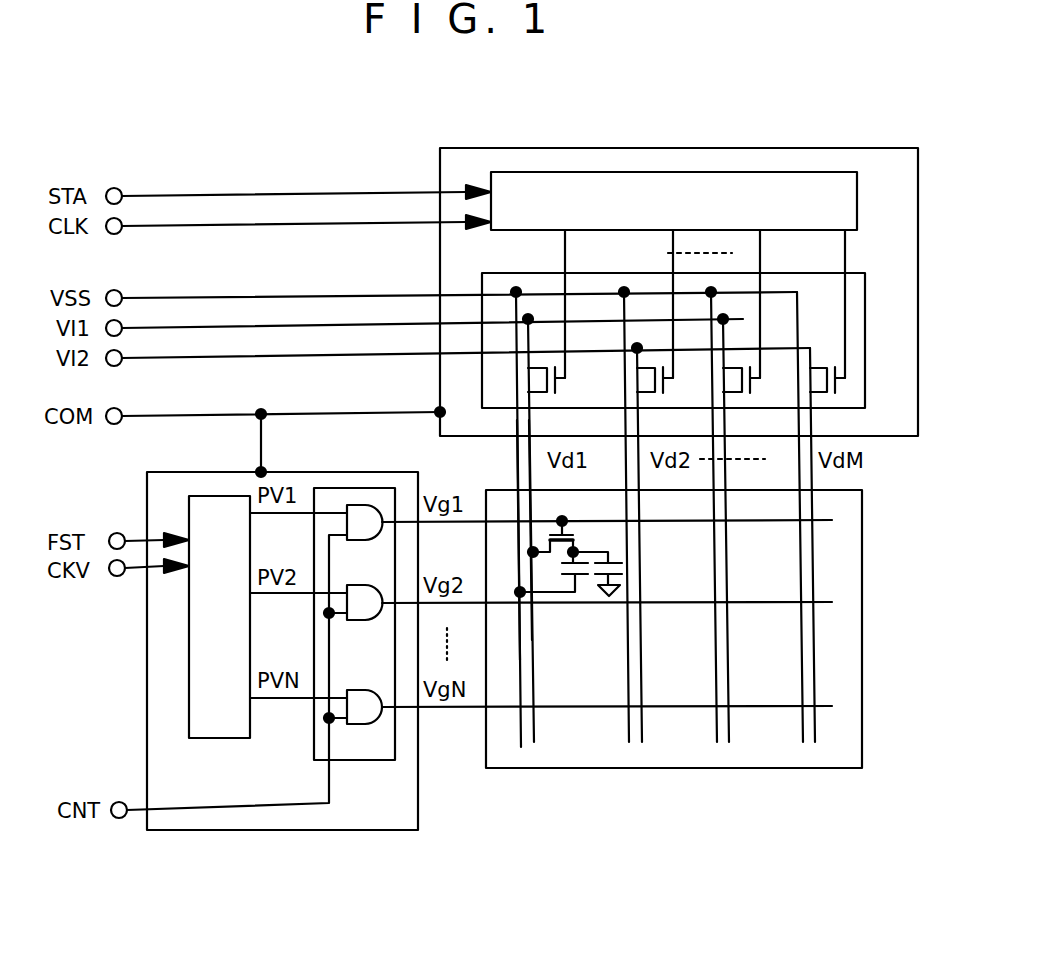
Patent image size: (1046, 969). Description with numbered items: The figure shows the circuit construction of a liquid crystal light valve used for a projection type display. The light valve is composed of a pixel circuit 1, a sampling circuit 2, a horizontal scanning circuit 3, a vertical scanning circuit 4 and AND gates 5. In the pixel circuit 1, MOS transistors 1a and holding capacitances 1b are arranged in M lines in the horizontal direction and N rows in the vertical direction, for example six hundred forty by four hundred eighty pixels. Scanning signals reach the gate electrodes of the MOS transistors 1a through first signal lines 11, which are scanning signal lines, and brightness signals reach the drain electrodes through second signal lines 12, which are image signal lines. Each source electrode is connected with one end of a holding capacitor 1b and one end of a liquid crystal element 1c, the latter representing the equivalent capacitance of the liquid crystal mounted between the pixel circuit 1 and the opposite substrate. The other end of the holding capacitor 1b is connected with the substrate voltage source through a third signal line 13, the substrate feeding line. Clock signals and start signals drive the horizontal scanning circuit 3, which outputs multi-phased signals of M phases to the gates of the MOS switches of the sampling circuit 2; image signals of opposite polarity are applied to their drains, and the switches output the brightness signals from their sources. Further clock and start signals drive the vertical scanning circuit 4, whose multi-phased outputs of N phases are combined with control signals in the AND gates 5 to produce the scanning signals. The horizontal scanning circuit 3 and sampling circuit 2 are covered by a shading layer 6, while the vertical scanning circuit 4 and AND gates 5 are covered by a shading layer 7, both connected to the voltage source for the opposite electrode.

The pixel circuit 1 is at (647, 770).
The MOS transistor 1a is at (578, 530).
The holding capacitor 1b is at (591, 576).
The liquid crystal element 1c is at (624, 567).
The sampling circuit 2 is at (865, 356).
The horizontal scanning circuit 3 is at (857, 200).
The vertical scanning circuit 4 is at (222, 738).
The AND gates 5 is at (377, 760).
The shading layer 6 is at (700, 147).
The shading layer 7 is at (330, 472).
The first signal line 11 is at (766, 520).
The second signal line 12 is at (533, 653).
The third signal line 13 is at (518, 677).